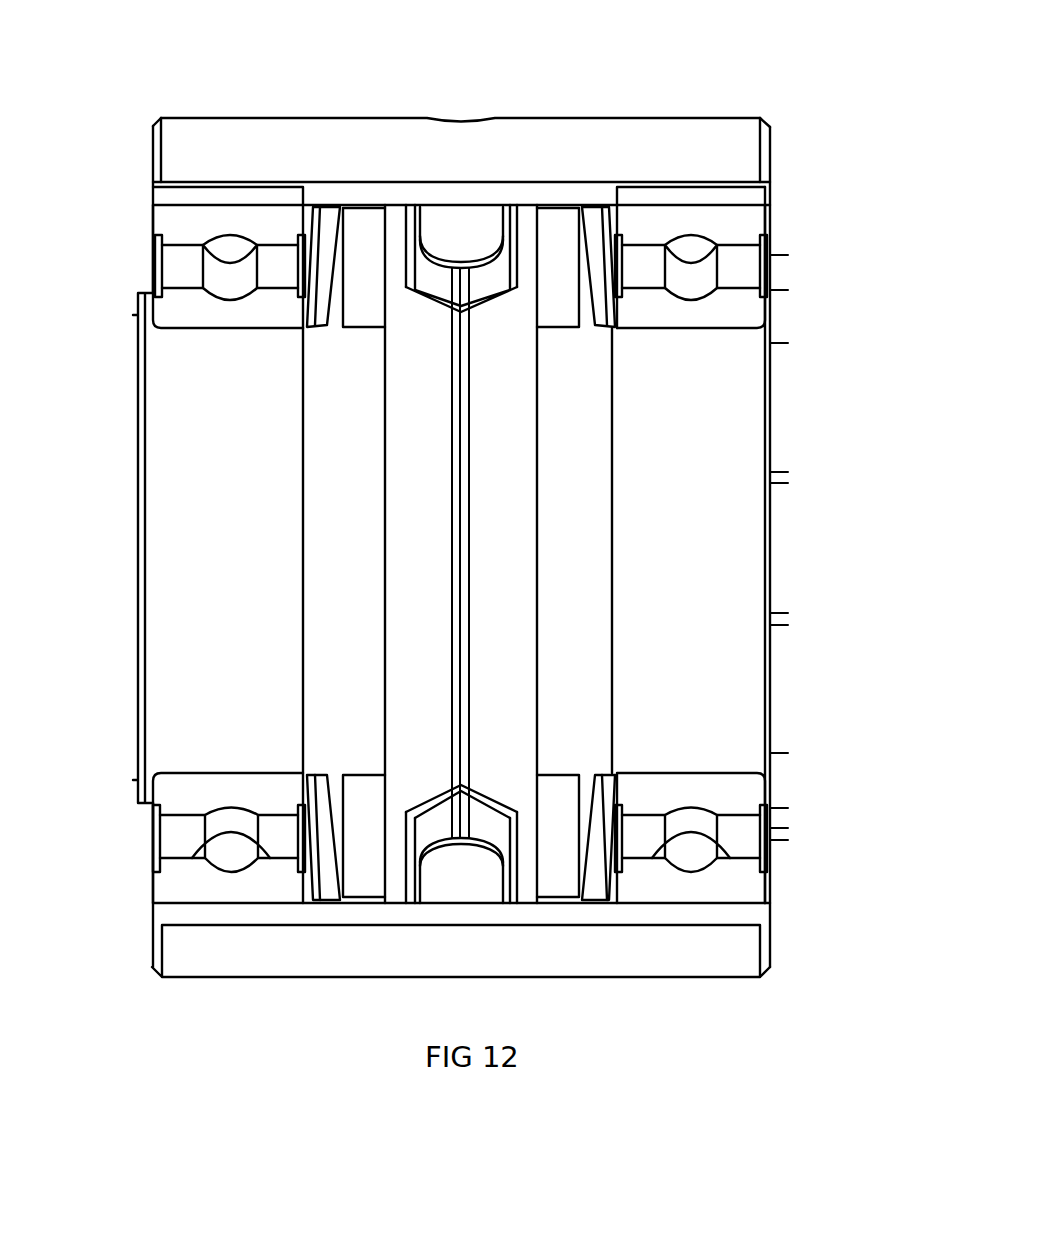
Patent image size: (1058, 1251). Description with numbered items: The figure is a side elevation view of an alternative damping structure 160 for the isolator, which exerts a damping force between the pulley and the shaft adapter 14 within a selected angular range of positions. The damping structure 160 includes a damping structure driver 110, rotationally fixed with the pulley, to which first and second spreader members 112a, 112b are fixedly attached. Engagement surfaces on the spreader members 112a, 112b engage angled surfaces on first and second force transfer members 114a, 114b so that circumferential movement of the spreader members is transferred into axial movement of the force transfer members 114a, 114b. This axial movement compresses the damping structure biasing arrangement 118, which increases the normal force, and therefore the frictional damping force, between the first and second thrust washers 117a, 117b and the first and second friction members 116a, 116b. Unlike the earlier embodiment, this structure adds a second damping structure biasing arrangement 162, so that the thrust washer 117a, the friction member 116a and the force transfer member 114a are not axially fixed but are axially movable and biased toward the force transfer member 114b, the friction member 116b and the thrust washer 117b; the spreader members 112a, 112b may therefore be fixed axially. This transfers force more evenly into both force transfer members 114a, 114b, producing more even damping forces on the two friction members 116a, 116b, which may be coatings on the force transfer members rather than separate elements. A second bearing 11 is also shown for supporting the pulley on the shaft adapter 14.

The second bearing 11 is at (160, 217).
The shaft adapter 14 is at (733, 453).
The damping structure driver 110 is at (700, 143).
The first spreader member 112a is at (465, 215).
The second spreader member 112b is at (472, 885).
The first force transfer member 114a is at (405, 467).
The second force transfer member 114b is at (503, 530).
The first friction member 116a is at (387, 267).
The second friction member 116b is at (540, 287).
The first thrust washer 117a is at (360, 240).
The second thrust washer 117b is at (557, 237).
The damping structure biasing arrangement 118 is at (597, 238).
The alternative damping structure 160 is at (404, 142).
The second damping structure biasing arrangement 162 is at (320, 320).